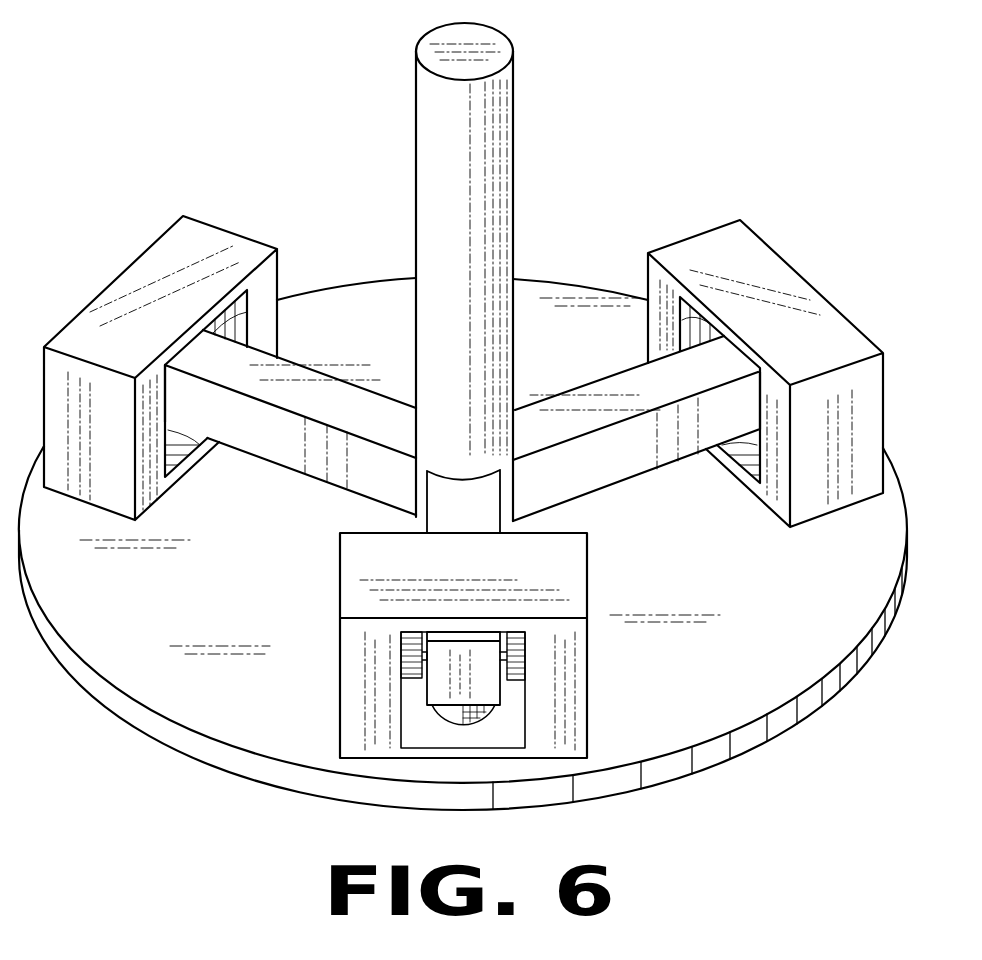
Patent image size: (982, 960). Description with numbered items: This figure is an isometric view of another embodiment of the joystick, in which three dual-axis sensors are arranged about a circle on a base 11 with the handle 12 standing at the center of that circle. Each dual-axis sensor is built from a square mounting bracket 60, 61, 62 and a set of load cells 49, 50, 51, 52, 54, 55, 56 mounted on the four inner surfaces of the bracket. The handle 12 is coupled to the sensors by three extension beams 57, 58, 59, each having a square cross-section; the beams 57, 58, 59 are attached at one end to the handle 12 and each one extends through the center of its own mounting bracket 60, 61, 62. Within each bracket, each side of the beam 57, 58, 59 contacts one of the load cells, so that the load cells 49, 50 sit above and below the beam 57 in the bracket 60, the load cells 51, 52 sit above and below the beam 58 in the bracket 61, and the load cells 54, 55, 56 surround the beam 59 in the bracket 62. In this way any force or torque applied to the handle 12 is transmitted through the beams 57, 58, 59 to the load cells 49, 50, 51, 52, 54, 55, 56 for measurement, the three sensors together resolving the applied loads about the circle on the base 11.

The disc base 11 is at (398, 300).
The handle 12 is at (432, 170).
The load cell 49 is at (213, 336).
The load cell 50 is at (188, 443).
The load cell 51 is at (707, 333).
The load cell 52 is at (743, 440).
The load cell 54 is at (412, 682).
The load cell 55 is at (520, 647).
The load cell 56 is at (502, 713).
The extension beam 57 is at (270, 440).
The extension beam 58 is at (615, 393).
The extension beam 59 is at (490, 663).
The square mounting bracket 60 is at (197, 275).
The square mounting bracket 61 is at (737, 258).
The square mounting bracket 62 is at (377, 553).